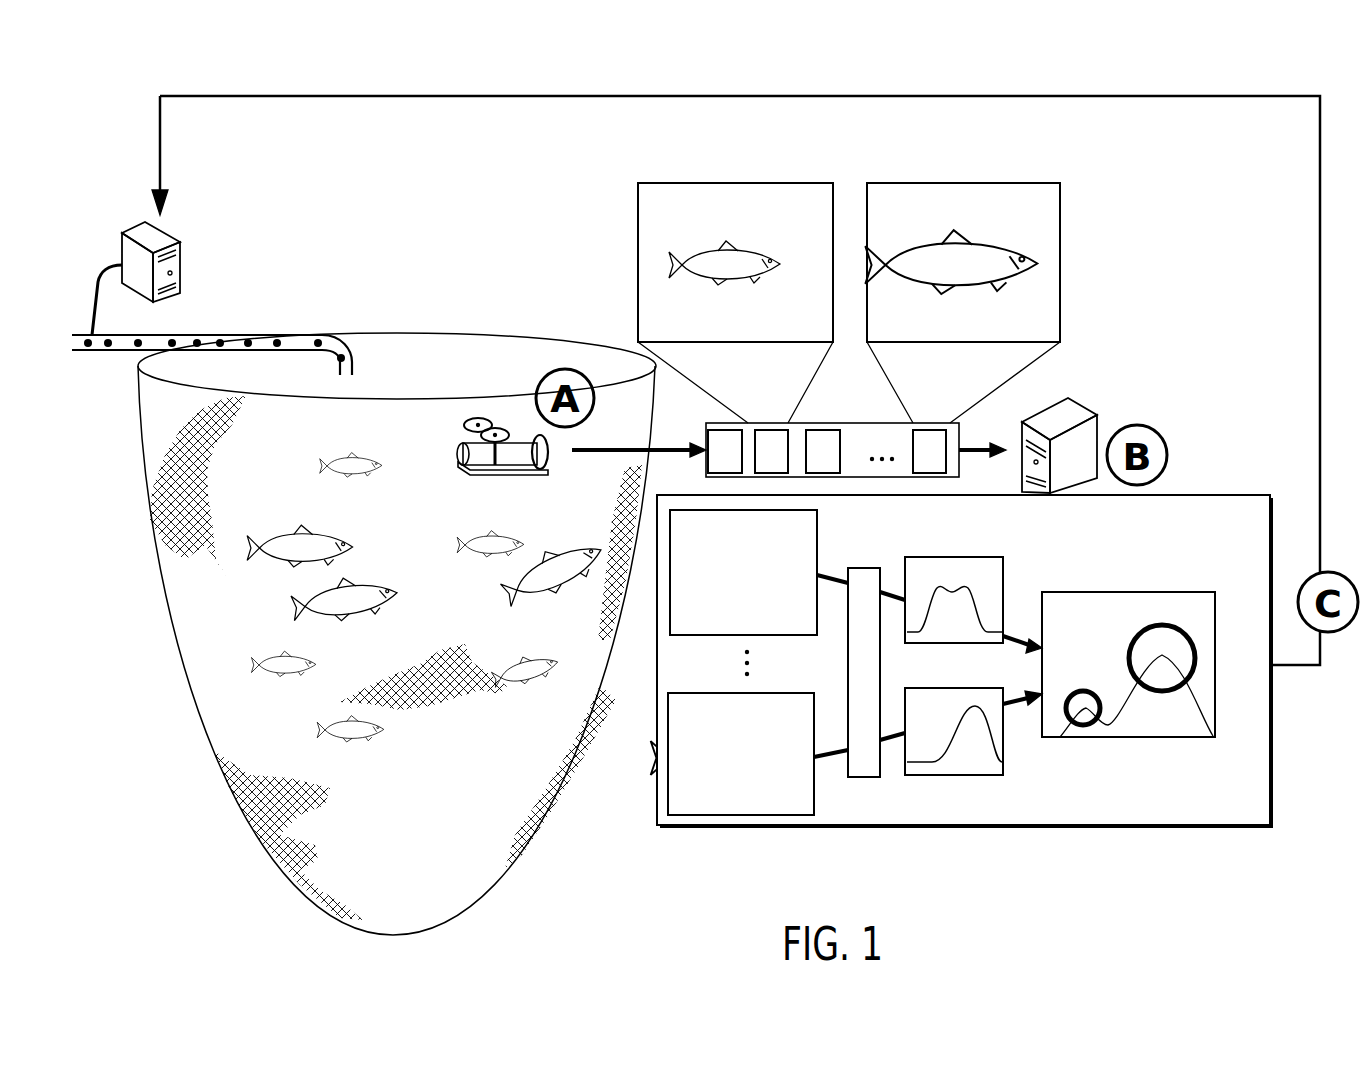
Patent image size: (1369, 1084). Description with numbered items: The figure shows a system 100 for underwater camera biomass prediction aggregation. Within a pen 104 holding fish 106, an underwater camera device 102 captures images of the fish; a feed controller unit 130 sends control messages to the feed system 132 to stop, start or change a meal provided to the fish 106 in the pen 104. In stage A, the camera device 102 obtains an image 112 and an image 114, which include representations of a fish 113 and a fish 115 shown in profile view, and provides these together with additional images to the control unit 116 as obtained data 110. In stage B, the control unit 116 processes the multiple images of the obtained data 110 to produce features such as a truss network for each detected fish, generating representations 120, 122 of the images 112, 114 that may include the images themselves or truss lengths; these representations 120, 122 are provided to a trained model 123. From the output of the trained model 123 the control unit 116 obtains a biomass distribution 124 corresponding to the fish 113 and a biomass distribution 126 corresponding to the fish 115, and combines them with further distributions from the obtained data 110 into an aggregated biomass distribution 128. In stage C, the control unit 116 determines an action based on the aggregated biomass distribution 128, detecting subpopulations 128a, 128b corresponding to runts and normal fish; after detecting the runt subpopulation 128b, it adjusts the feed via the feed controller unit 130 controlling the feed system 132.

The system 100 is at (90, 86).
The underwater camera device 102 is at (479, 416).
The pen 104 is at (140, 466).
The fish 106 is at (248, 427).
The obtained data 110 is at (818, 424).
The image 112 is at (765, 184).
The fish 113 is at (764, 260).
The image 114 is at (1026, 184).
The fish 115 is at (994, 250).
The control unit 116 is at (1090, 408).
The representation 120 is at (820, 545).
The representation 122 is at (788, 694).
The trained model 123 is at (870, 778).
The biomass distribution 124 is at (989, 557).
The biomass distribution 126 is at (1006, 762).
The aggregated biomass distribution 128 is at (1138, 593).
The subpopulation 128a is at (1136, 637).
The subpopulation 128b is at (1116, 740).
The feed controller unit 130 is at (181, 246).
The feed system 132 is at (190, 334).